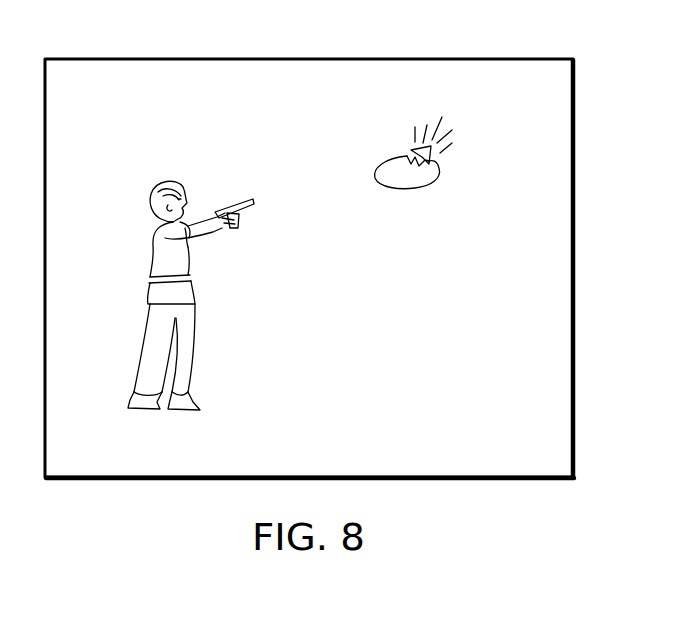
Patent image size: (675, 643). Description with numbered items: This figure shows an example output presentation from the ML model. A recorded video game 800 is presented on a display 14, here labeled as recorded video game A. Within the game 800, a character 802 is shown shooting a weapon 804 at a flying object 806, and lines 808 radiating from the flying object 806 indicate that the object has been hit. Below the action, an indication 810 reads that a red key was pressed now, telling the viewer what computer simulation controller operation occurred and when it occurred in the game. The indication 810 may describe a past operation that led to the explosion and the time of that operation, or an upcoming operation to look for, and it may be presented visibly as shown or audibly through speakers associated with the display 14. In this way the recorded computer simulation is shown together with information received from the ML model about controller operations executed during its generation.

The display 14 is at (447, 57).
The recorded video game 800 is at (166, 87).
The character 802 is at (188, 265).
The weapon 804 is at (233, 202).
The flying object 806 is at (437, 153).
The lines 808 is at (413, 142).
The indication 810 is at (431, 444).